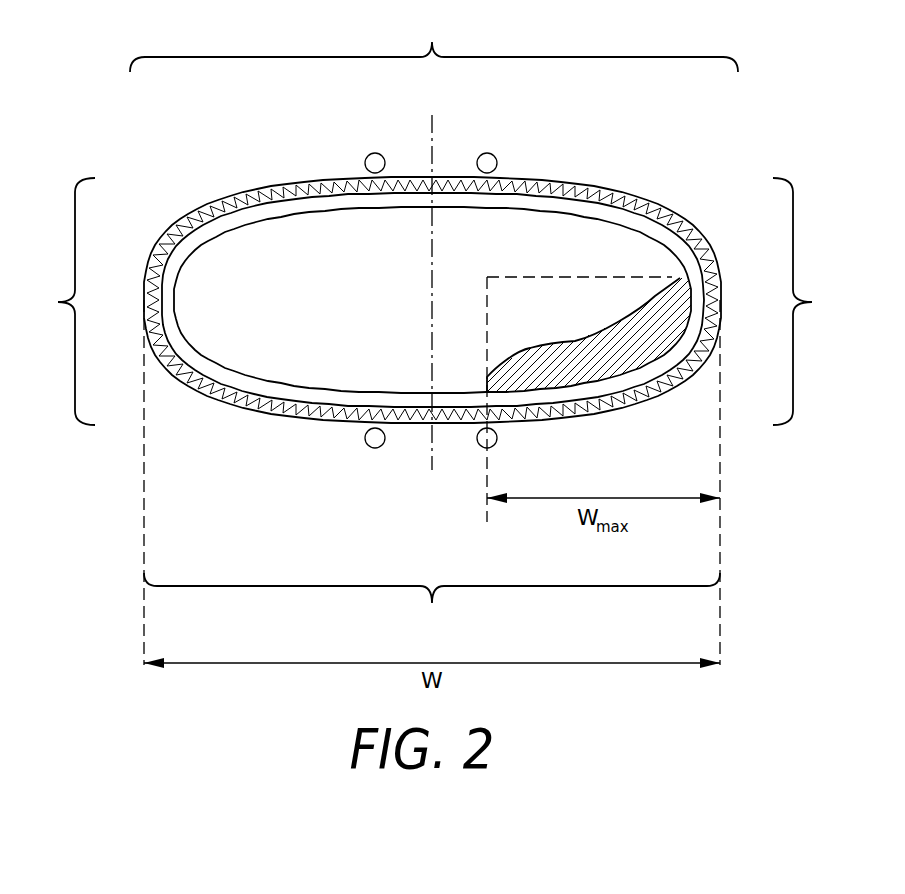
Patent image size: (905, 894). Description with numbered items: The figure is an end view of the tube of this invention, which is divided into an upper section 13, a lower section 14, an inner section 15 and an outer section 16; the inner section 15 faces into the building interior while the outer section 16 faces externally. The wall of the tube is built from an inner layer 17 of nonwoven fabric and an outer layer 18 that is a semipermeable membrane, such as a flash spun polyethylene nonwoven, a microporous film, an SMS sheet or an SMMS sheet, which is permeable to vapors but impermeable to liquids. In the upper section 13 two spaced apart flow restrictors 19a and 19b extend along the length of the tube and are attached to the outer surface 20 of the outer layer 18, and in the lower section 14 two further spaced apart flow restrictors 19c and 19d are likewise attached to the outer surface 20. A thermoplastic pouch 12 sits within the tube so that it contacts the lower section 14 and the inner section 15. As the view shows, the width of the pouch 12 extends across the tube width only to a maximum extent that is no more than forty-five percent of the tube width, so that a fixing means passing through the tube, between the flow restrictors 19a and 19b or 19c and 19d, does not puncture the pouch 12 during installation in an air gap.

The pouch 12 is at (582, 338).
The upper section 13 is at (434, 41).
The lower section 14 is at (432, 604).
The inner section 15 is at (806, 301).
The outer section 16 is at (61, 301).
The inner layer 17 is at (275, 210).
The outer layer 18 is at (200, 228).
The flow restrictor 19a is at (375, 152).
The flow restrictor 19b is at (487, 152).
The flow restrictor 19c is at (375, 449).
The flow restrictor 19d is at (497, 438).
The outer surface 20 is at (653, 210).